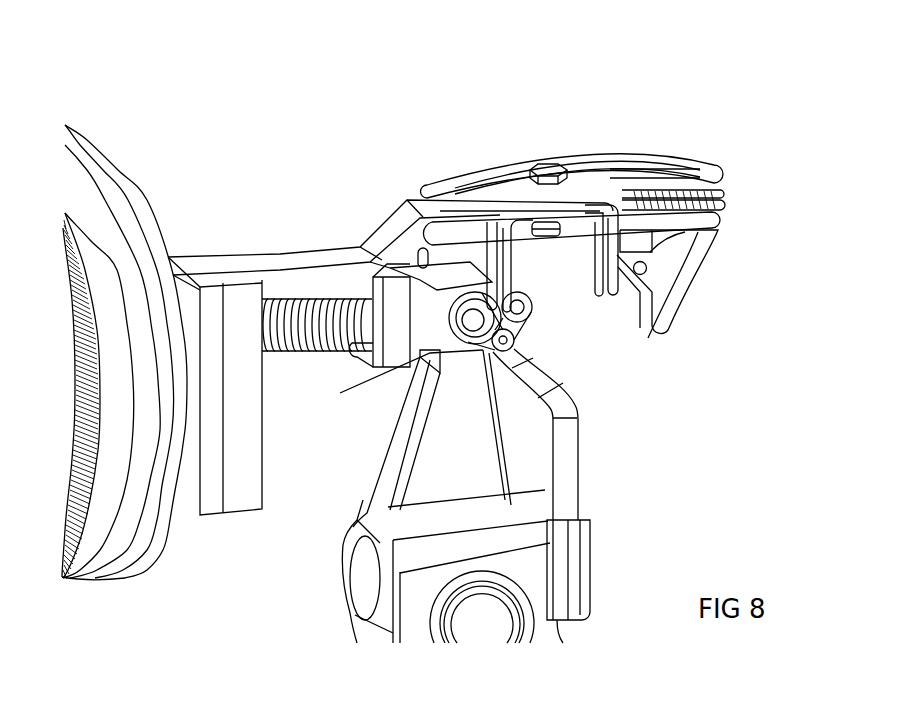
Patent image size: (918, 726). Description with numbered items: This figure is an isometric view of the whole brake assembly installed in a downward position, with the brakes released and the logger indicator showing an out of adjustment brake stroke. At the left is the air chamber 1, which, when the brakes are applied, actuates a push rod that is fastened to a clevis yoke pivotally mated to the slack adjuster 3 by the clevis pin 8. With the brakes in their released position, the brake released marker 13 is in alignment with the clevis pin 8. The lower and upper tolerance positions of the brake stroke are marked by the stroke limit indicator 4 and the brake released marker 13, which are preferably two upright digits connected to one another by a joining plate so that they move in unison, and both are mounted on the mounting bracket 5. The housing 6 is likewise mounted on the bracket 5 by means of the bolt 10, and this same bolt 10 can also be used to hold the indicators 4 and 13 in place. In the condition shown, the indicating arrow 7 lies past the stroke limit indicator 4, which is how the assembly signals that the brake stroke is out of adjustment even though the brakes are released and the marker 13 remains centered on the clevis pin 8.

The air chamber 1 is at (145, 460).
The slack adjuster 3 is at (300, 323).
The stroke limit indicator 4 is at (610, 290).
The mounting bracket 5 is at (307, 262).
The housing 6 is at (462, 186).
The indicating arrow 7 is at (658, 264).
The clevis pin 8 is at (480, 323).
The bolt 10 is at (548, 158).
The brake released marker 13 is at (520, 308).